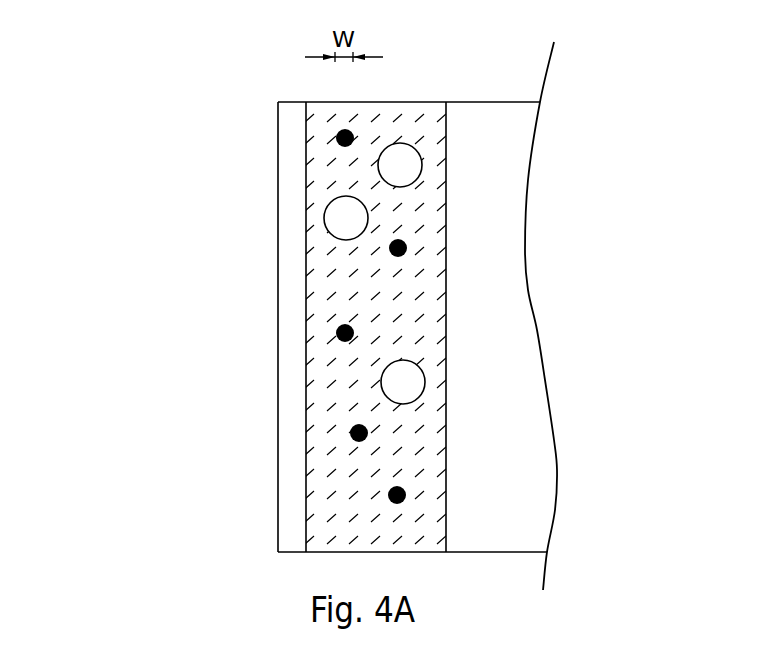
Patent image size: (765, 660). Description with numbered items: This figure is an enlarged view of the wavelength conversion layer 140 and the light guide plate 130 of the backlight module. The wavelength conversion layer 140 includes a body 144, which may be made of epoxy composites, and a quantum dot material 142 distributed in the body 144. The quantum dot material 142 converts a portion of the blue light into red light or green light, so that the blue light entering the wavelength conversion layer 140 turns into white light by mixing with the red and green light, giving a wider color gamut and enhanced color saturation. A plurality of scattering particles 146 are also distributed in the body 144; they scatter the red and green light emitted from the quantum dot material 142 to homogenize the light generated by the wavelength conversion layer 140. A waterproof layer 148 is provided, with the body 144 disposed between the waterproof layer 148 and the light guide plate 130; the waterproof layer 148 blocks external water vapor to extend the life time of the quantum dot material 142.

The light guide plate 130 is at (497, 310).
The wavelength conversion layer 140 is at (105, 155).
The quantum dot material 142 is at (392, 255).
The body 144 is at (355, 456).
The scattering particles 146 is at (403, 382).
The waterproof layer 148 is at (293, 158).